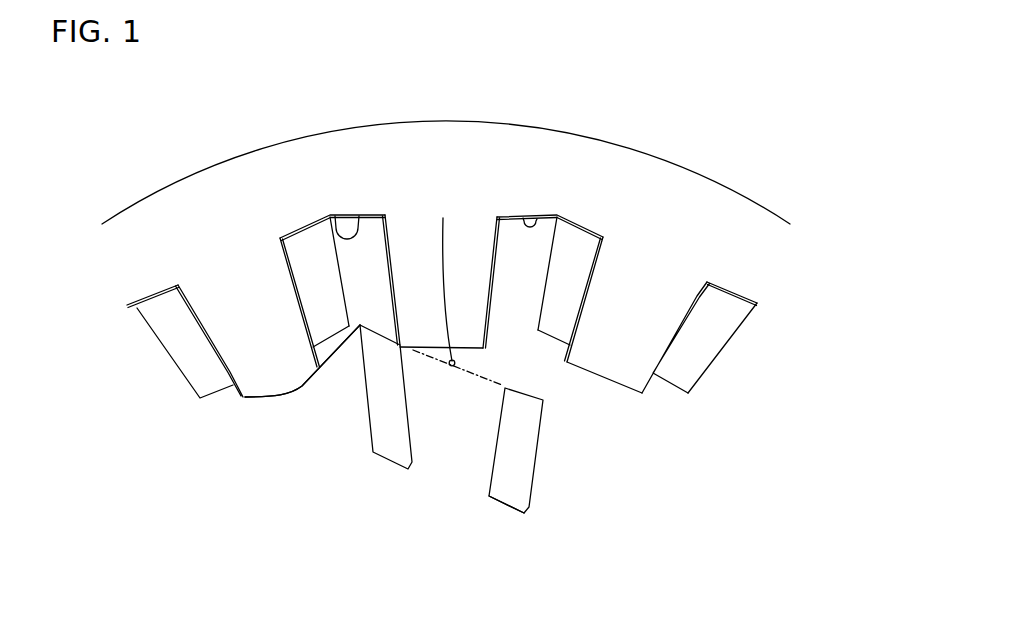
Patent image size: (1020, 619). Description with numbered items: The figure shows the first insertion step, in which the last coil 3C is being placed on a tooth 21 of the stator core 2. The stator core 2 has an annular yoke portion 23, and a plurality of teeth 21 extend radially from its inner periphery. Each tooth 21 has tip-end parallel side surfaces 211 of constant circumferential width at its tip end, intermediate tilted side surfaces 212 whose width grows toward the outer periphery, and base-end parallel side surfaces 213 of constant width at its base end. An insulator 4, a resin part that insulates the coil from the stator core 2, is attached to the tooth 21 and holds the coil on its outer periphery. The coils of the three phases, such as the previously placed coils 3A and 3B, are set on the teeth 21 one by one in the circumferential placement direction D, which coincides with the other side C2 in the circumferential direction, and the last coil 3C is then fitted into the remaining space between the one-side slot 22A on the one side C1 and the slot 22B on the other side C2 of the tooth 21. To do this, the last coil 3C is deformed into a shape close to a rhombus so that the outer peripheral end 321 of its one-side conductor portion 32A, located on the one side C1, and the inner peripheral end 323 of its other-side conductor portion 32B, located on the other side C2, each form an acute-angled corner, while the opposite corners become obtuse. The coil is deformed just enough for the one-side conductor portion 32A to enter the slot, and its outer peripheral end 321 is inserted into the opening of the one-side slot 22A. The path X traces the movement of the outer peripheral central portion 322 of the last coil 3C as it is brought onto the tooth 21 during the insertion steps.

The stator core 2 is at (248, 143).
The tooth 21 is at (467, 275).
The one-side slot 22A is at (341, 217).
The second magnet insertion hole 22B is at (624, 211).
The insulator 4 is at (390, 252).
The path X is at (443, 243).
The tip-end parallel side surfaces 211 is at (486, 328).
The intermediate tilted side surfaces 212 is at (490, 270).
The base-end parallel side surfaces 213 is at (520, 217).
The annular yoke portion 23 is at (148, 267).
The first slit 3A is at (677, 406).
The second slit 3B is at (227, 404).
The last coil 3C is at (473, 453).
The one-side conductor portion 32A is at (378, 465).
The other-side conductor portion 32B is at (541, 484).
The outer peripheral end 321 is at (357, 328).
The outer peripheral central portion 322 is at (452, 366).
The inner peripheral end 323 is at (527, 512).
The circumferential direction D is at (150, 108).
The one side in the circumferential direction C1 is at (100, 201).
The other side in the circumferential direction C2 is at (158, 169).